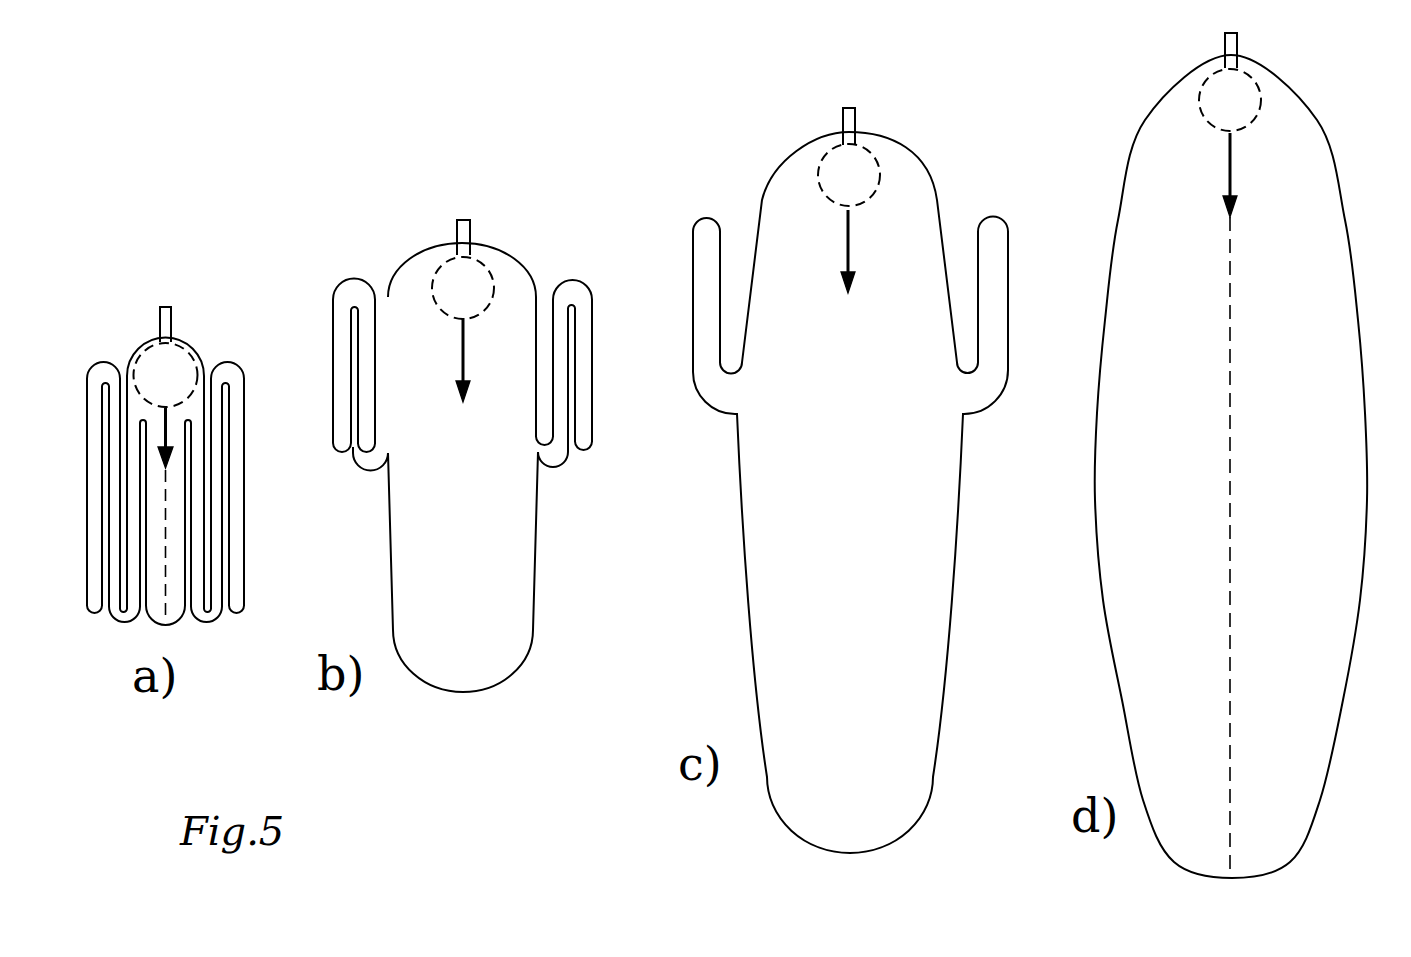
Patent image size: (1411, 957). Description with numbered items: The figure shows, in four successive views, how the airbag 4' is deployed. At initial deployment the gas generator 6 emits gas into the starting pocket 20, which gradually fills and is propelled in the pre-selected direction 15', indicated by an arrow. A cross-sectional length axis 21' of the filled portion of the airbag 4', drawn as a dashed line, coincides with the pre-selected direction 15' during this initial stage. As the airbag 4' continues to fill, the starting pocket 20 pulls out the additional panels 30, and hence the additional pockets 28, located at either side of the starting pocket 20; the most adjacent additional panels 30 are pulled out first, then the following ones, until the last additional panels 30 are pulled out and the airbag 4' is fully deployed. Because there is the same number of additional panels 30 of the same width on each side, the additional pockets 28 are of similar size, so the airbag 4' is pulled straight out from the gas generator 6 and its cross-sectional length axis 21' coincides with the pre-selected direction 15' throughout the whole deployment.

The airbag 4' is at (736, 466).
The gas generator 6 is at (156, 388).
The additional pockets 28 is at (217, 423).
The additional panels 30 is at (193, 533).
The starting pocket 20 is at (152, 548).
The pre-selected direction 15' is at (697, 300).
The cross-sectional length axis 21' is at (1272, 547).